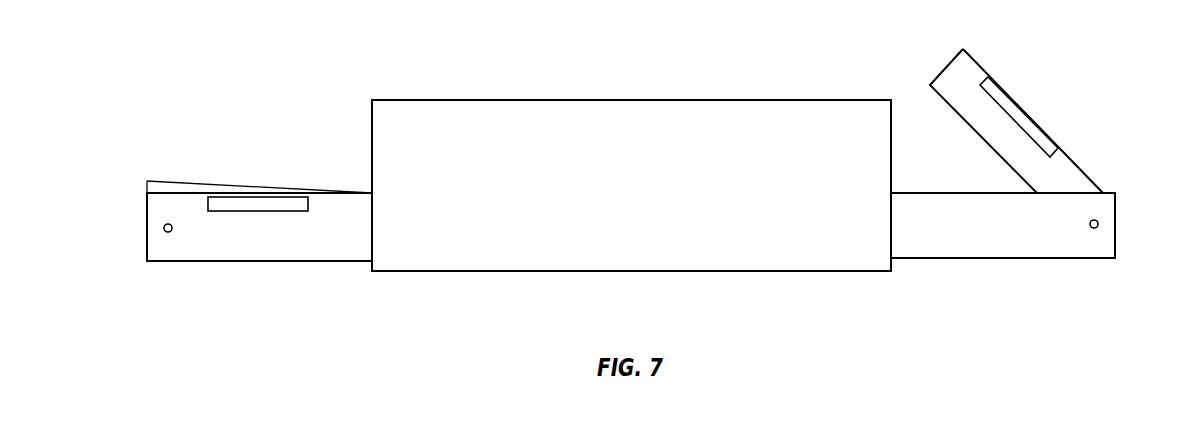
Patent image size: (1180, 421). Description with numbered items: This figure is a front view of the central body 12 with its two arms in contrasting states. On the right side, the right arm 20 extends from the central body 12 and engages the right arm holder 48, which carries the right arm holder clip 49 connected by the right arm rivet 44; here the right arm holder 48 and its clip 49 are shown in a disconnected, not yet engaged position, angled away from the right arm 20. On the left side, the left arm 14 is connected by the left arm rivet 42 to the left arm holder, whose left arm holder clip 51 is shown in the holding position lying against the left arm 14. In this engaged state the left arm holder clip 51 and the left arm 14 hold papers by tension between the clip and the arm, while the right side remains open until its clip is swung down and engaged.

The central body 12 is at (395, 98).
The left arm 14 is at (260, 262).
The right arm 20 is at (1003, 258).
The left arm rivet 42 is at (163, 228).
The right arm rivet 44 is at (1101, 223).
The right arm holder 48 is at (963, 49).
The right arm holder clip 49 is at (1020, 117).
The left arm holder clip 51 is at (257, 203).